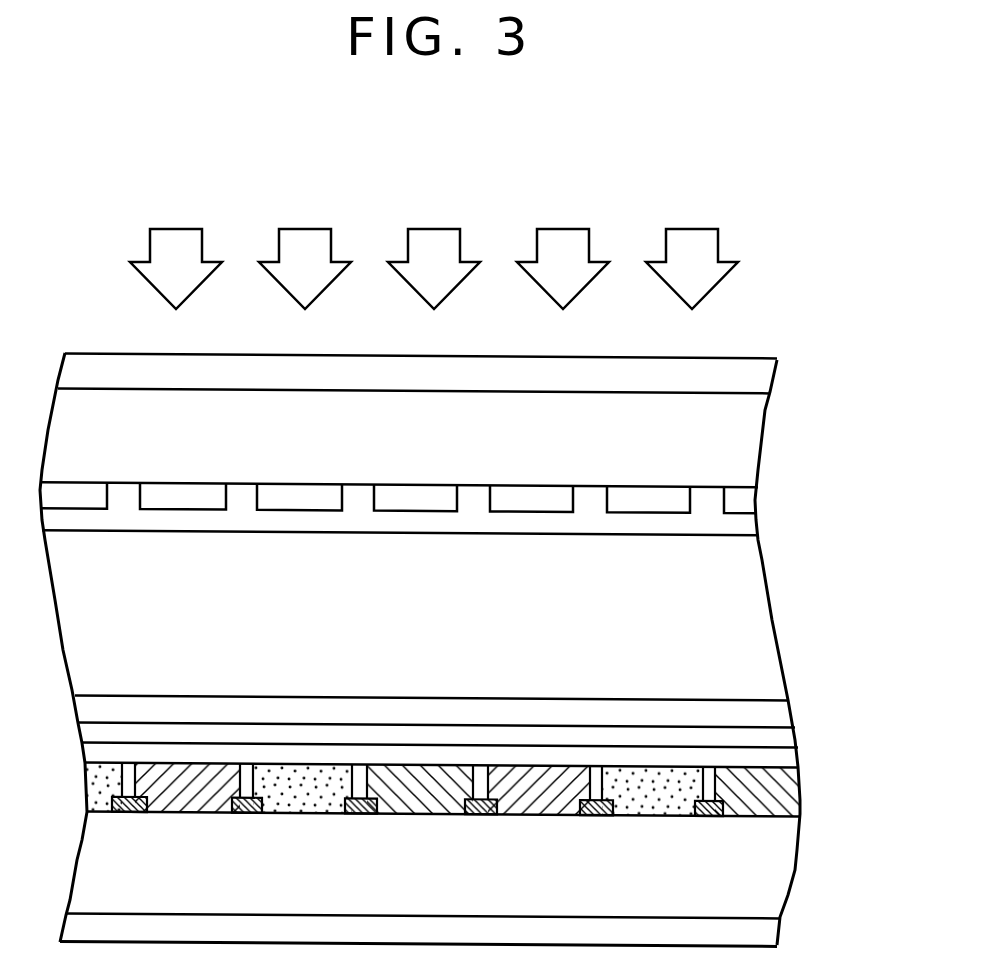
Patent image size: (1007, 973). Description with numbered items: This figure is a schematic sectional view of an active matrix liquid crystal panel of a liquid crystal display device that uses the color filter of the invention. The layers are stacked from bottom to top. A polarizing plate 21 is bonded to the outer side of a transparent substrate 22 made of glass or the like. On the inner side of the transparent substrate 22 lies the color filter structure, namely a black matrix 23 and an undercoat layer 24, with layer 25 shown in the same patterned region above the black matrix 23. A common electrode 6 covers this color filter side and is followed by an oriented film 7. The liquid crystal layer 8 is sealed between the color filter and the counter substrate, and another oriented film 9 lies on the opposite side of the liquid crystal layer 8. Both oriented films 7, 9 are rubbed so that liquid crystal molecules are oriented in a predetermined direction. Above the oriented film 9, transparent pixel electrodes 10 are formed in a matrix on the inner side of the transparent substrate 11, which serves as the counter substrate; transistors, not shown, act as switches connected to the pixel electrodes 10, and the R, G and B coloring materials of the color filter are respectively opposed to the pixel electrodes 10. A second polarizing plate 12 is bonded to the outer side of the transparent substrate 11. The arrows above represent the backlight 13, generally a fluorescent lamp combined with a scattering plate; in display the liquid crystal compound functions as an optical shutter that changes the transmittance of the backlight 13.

The backlight 13 is at (722, 282).
The polarizing plate 12 is at (760, 374).
The transparent substrate 11 is at (750, 425).
The pixel electrodes 10 is at (745, 494).
The oriented film 9 is at (745, 519).
The liquid crystal layer 8 is at (750, 600).
The oriented film 7 is at (762, 709).
The common electrode 6 is at (785, 735).
The insulating film 25 is at (788, 759).
The undercoat layer 24 is at (782, 790).
The black matrix 23 is at (712, 811).
The transparent substrate 22 is at (778, 867).
The polarizing plate 21 is at (765, 929).